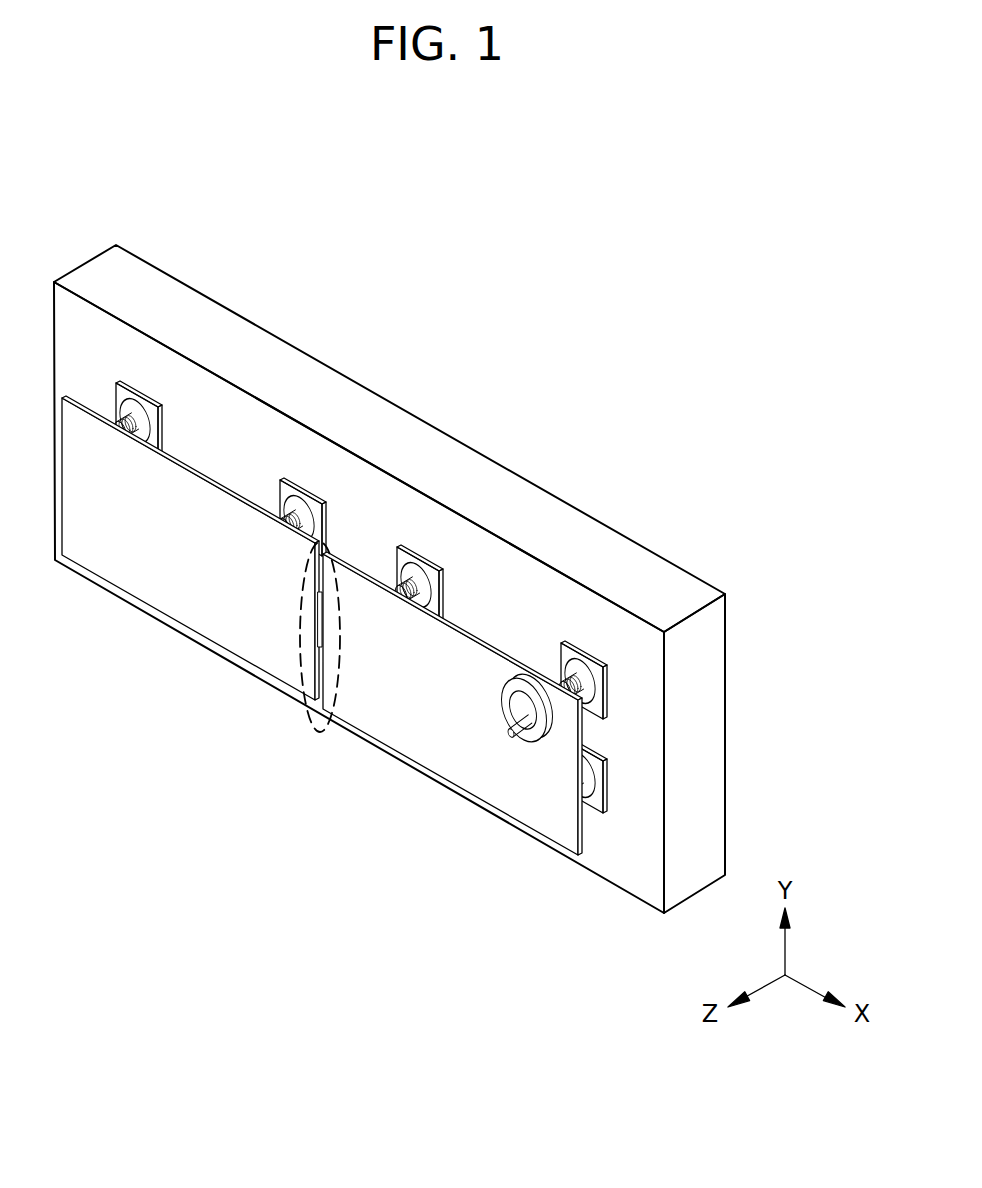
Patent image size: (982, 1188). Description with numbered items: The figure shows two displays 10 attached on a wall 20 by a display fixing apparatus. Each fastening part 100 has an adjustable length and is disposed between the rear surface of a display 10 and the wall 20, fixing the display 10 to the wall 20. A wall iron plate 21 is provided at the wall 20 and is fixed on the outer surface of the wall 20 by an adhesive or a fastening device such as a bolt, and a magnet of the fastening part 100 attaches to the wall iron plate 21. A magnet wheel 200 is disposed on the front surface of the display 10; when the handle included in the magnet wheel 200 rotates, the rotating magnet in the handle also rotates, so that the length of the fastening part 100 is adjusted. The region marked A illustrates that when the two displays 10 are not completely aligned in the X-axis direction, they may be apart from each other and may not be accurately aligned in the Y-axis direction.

The display 10 is at (412, 718).
The wall 20 is at (642, 546).
The wall iron plate 21 is at (461, 549).
The fastening part 100 is at (278, 518).
The magnet wheel 200 is at (540, 732).
The region A is at (323, 733).